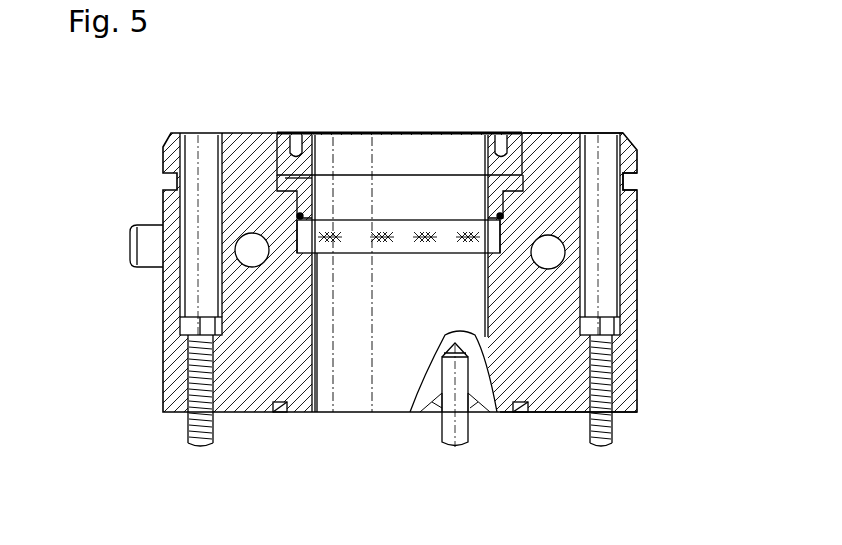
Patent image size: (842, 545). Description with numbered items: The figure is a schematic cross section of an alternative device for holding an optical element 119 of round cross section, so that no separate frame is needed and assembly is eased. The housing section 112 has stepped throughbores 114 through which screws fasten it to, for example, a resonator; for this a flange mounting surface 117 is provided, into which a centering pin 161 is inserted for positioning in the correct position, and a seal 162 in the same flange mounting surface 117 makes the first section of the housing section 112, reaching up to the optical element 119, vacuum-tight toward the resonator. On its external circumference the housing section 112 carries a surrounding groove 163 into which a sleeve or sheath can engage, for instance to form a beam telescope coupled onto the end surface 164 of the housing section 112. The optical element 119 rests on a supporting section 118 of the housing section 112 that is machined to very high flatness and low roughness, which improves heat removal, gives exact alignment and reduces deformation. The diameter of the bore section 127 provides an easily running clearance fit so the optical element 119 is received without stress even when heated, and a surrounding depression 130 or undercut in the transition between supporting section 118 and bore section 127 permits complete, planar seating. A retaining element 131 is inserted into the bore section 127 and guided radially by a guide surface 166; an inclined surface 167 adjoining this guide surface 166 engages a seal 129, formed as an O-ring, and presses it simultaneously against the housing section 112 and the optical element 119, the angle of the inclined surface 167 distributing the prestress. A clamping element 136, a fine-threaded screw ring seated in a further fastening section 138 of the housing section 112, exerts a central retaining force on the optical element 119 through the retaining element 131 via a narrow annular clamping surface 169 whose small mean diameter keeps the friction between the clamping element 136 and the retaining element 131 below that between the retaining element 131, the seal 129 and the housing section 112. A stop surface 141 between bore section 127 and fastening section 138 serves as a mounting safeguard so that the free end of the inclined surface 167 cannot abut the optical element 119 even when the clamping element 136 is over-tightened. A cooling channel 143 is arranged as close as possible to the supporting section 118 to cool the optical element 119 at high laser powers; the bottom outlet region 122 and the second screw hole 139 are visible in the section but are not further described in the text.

The housing section 112 is at (628, 370).
The stepped throughbores 114 is at (192, 292).
The flange mounting surface 117 is at (566, 414).
The supporting section 118 is at (467, 256).
The optical element 119 is at (403, 258).
The outlet passage 122 is at (343, 402).
The bore section 127 is at (522, 214).
The seal 129 is at (300, 213).
The surrounding depression 130 is at (522, 247).
The retaining element 131 is at (287, 190).
The clamping element 136 is at (284, 135).
The fastening section 138 is at (258, 147).
The screw hole 139 is at (512, 133).
The stop surface 141 is at (580, 147).
The cooling channel 143 is at (548, 262).
The centering pin 161 is at (450, 430).
The seal 162 is at (279, 413).
The surrounding groove 163 is at (648, 175).
The end surface 164 is at (540, 132).
The guide surface 166 is at (285, 197).
The inclined surface 167 is at (302, 217).
The clamping surface 169 is at (317, 182).